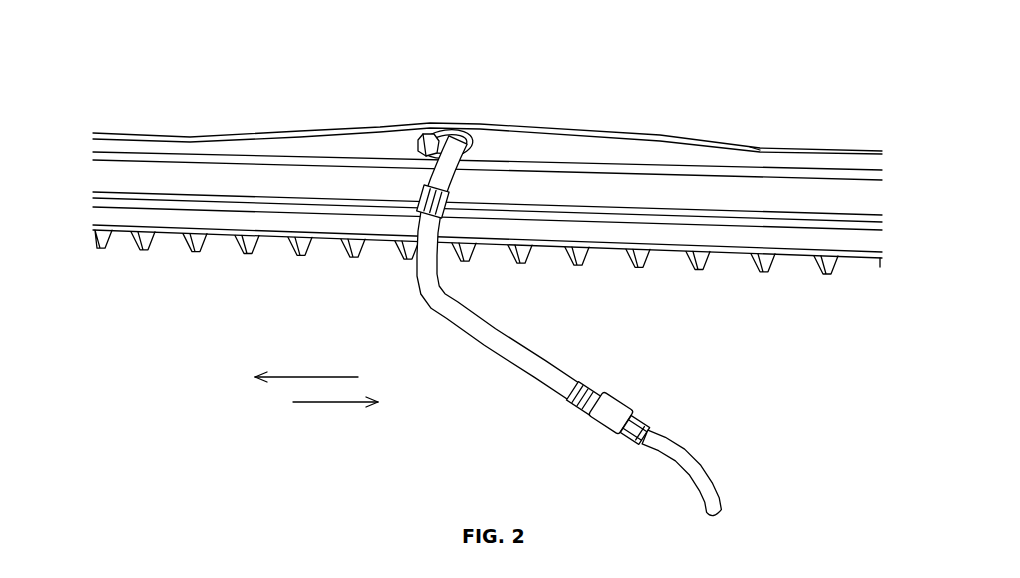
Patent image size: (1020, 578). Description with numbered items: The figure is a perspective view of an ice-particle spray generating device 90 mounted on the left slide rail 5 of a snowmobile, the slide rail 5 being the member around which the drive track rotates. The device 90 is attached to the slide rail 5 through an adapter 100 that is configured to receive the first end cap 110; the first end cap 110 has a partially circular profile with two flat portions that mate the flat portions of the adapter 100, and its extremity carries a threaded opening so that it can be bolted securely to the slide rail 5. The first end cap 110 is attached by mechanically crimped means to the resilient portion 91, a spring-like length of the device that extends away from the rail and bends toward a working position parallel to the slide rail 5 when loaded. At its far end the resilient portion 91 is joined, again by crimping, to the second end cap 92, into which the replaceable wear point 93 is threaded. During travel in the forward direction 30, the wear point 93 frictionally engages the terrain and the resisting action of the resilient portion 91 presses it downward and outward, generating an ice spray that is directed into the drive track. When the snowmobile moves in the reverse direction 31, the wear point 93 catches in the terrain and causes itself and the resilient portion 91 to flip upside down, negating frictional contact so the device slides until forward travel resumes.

The slide rail 5 is at (552, 142).
The forward direction 30 is at (306, 368).
The reverse direction 31 is at (350, 406).
The ice-particle spray generating device 90 is at (567, 326).
The resilient portion 91 is at (488, 272).
The second end cap 92 is at (605, 408).
The wear point 93 is at (693, 463).
The adapter 100 is at (433, 128).
The first end cap 110 is at (452, 177).